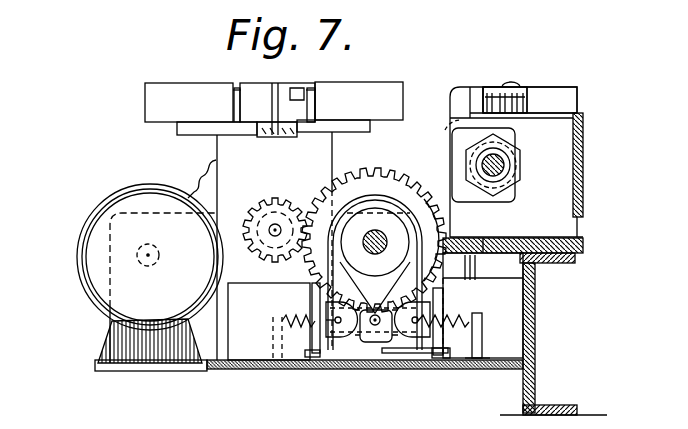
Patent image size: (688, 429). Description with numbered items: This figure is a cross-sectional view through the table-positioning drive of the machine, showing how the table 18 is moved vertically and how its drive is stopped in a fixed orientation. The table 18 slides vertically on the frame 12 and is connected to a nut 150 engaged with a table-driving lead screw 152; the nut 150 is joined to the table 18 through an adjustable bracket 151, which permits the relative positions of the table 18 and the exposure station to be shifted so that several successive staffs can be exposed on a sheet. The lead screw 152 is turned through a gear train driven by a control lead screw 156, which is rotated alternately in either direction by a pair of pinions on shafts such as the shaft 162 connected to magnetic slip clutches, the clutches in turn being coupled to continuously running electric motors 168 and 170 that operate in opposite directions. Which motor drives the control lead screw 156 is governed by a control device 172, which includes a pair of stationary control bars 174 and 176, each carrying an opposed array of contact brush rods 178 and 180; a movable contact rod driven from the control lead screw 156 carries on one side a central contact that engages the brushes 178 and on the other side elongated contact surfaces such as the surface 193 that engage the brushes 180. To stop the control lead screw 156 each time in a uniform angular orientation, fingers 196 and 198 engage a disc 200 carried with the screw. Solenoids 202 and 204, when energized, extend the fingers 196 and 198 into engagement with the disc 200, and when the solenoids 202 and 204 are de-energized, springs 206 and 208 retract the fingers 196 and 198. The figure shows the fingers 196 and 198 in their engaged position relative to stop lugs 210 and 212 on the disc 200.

The frame 12 is at (536, 331).
The table 18 is at (540, 100).
The nut 150 is at (512, 188).
The adjustable bracket 151 is at (473, 95).
The table-driving lead screw 152 is at (504, 166).
The control lead screw 156 is at (272, 226).
The shaft 162 is at (144, 267).
The electric motor 168 is at (458, 268).
The electric motor 170 is at (105, 233).
The control device 172 is at (276, 87).
The stationary control bar 174 is at (192, 95).
The stationary control bar 176 is at (367, 95).
The contact brush rods 178 is at (237, 87).
The contact brush rods 180 is at (314, 87).
The elongated contact surface 193 is at (298, 93).
The finger 196 is at (403, 342).
The finger 198 is at (348, 347).
The disc 200 is at (375, 215).
The solenoid 202 is at (262, 347).
The solenoid 204 is at (473, 363).
The spring 206 is at (303, 309).
The spring 208 is at (482, 333).
The stop lug 210 is at (440, 229).
The stop lug 212 is at (335, 215).